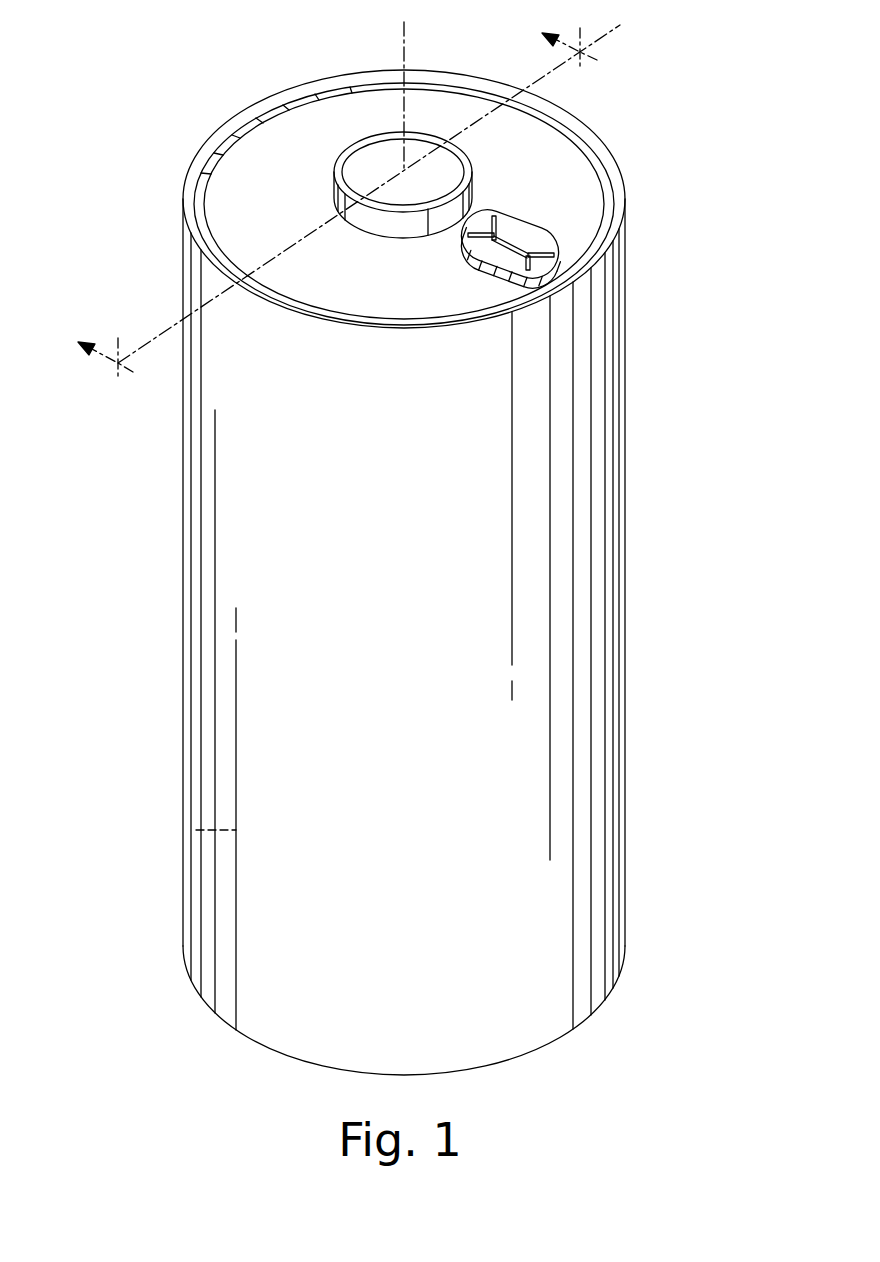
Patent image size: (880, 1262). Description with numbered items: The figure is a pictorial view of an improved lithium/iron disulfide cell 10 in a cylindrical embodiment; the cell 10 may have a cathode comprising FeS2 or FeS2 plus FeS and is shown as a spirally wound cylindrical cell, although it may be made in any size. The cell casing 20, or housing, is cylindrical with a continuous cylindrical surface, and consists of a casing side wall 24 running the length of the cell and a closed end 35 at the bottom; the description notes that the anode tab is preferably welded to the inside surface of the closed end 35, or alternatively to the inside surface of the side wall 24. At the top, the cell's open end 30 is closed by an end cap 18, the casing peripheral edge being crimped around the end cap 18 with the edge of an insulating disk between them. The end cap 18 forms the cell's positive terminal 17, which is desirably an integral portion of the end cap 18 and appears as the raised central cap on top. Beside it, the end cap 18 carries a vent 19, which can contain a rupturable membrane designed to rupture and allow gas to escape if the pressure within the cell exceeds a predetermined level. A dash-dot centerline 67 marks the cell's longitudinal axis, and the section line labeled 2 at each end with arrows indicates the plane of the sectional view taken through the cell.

The cell 10 is at (157, 568).
The cell casing 20 is at (627, 465).
The casing side wall 24 is at (625, 387).
The closed end of casing 35 is at (248, 1040).
The end cap 18 is at (588, 202).
The open end of cell 30 is at (568, 163).
The positive terminal 17 is at (360, 143).
The vent 19 is at (495, 253).
The central axis 67 is at (405, 53).
The section line 2- 2 is at (349, 205).